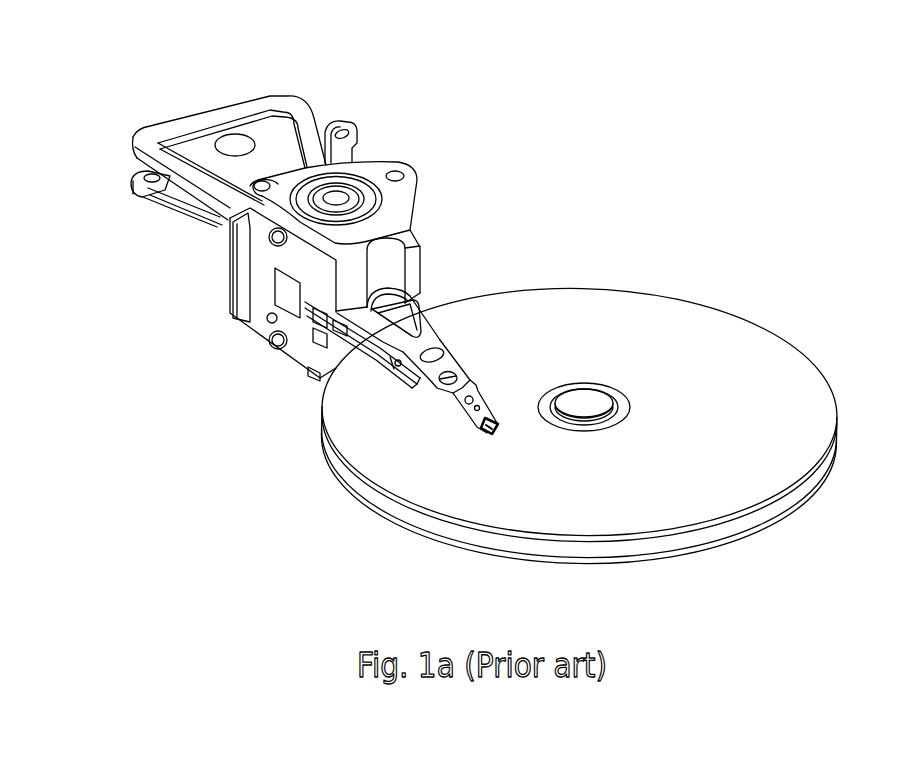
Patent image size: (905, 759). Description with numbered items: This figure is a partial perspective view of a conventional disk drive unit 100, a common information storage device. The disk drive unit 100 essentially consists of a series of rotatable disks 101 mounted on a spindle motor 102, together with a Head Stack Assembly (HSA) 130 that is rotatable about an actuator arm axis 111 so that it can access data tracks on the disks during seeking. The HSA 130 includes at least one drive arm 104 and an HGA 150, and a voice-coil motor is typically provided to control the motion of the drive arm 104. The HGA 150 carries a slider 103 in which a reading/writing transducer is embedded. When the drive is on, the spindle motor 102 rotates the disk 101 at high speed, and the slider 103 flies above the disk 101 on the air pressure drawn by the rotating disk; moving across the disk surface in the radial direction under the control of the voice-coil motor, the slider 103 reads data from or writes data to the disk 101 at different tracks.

The disk drive unit 100 is at (82, 34).
The rotatable disk 101 is at (712, 388).
The spindle motor 102 is at (590, 400).
The slider 103 is at (493, 418).
The drive arm 104 is at (430, 337).
The actuator arm axis 111 is at (337, 197).
The head stack assembly 130 is at (408, 235).
The HGA 150 is at (463, 380).